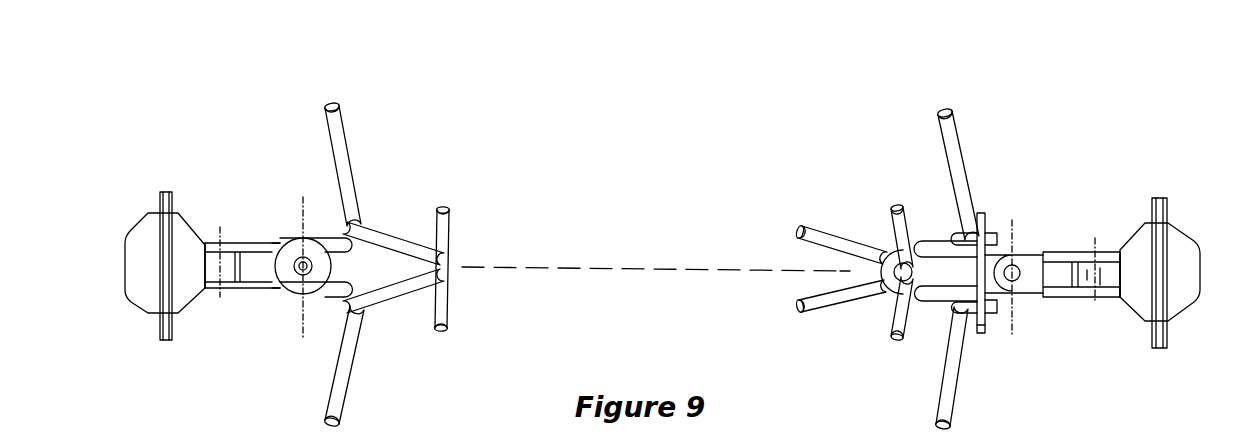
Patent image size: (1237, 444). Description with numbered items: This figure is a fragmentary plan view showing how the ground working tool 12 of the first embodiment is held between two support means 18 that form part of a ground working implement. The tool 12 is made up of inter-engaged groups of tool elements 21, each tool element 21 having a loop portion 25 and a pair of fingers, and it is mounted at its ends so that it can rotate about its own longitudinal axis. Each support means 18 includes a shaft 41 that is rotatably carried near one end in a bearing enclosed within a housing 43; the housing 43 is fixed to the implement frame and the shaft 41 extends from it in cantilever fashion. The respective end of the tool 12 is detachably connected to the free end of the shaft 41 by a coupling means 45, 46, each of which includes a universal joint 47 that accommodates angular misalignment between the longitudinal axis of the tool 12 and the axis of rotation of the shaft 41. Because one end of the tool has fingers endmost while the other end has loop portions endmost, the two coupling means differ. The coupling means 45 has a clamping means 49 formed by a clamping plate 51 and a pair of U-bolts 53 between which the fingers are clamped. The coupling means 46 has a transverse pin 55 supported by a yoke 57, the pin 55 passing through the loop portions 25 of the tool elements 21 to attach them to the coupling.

The ground working tool 12 is at (815, 195).
The support means 18 is at (217, 195).
The tool element 21 is at (355, 138).
The loop portion 25 is at (330, 297).
The shaft 41 is at (210, 277).
The housing 43 is at (130, 232).
The coupling means 45 is at (1026, 309).
The coupling means 46 is at (243, 240).
The universal joint 47 is at (257, 277).
The clamping means 49 is at (984, 340).
The clamping plate 51 is at (987, 213).
The U-bolt 53 is at (945, 240).
The transverse pin 55 is at (328, 238).
The yoke 57 is at (272, 243).